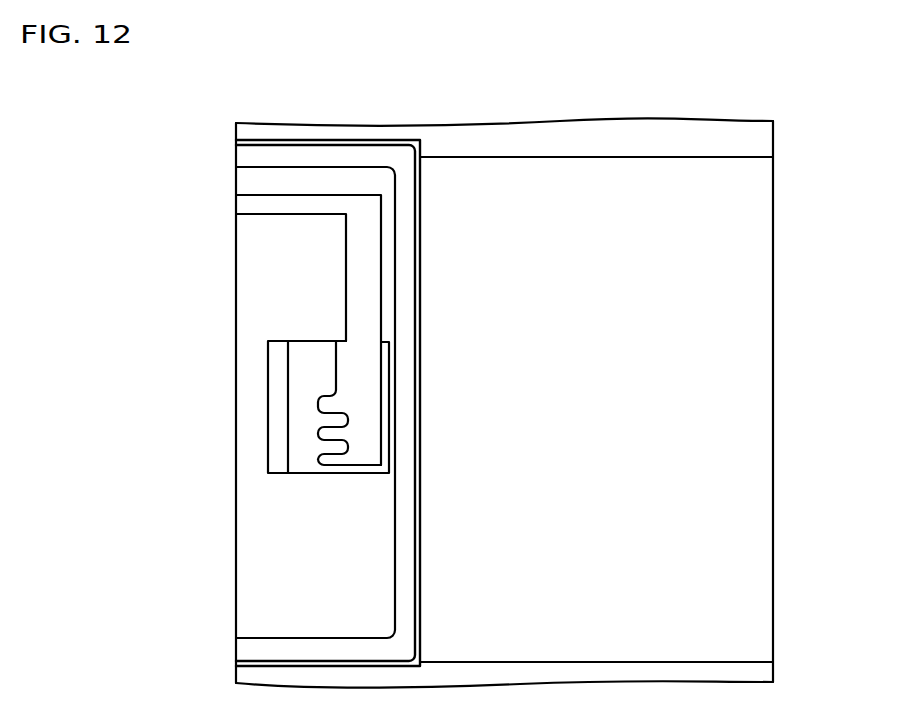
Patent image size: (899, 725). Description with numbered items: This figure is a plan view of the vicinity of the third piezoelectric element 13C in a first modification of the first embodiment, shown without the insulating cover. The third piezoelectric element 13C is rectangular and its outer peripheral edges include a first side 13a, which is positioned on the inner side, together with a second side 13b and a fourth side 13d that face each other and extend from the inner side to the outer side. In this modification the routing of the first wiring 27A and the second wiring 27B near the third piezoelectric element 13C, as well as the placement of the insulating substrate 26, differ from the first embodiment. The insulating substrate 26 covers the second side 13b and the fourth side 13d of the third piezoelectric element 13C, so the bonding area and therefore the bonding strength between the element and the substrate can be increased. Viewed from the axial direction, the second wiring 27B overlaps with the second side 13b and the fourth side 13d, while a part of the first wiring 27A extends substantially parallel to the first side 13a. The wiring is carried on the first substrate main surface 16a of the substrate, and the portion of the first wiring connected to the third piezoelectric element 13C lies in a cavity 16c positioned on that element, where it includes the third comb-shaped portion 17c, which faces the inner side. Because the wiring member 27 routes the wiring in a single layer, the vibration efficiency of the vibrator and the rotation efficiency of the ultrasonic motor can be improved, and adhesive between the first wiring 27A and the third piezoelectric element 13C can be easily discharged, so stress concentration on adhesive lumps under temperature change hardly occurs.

The third piezoelectric element 13C is at (747, 321).
The second side 13b is at (720, 157).
The fourth side 13d is at (720, 662).
The first side 13a is at (287, 402).
The wiring member 27 is at (263, 403).
The second wiring 27B is at (245, 156).
The first wiring 27A is at (245, 205).
The insulating substrate 26 is at (245, 240).
The first substrate main surface 16a is at (250, 485).
The cavity 16c is at (277, 376).
The third comb-shaped portion 17c is at (326, 430).